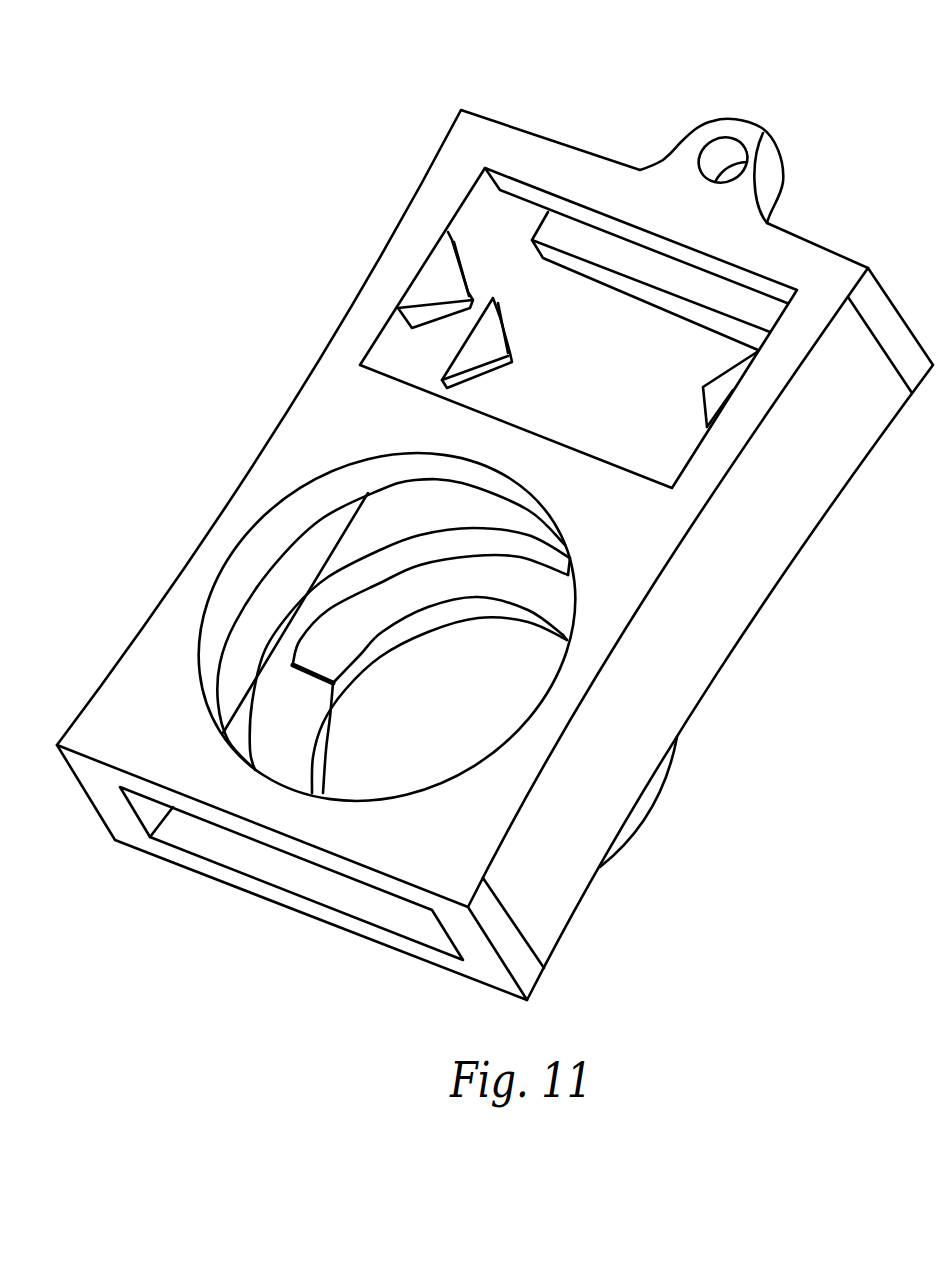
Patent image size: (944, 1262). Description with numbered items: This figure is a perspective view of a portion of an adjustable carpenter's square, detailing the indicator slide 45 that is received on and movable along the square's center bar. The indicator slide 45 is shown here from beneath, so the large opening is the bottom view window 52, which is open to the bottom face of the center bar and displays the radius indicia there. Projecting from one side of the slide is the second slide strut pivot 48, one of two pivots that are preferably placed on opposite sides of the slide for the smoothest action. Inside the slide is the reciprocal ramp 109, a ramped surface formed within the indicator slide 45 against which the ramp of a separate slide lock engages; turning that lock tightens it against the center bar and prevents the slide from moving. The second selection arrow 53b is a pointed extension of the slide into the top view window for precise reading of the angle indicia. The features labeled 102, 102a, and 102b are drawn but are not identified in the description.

The bottom view window 52 is at (437, 113).
The second slide strut pivot 48 is at (703, 133).
The indicator slide 45 is at (145, 698).
The reciprocal ramp 109 is at (330, 647).
The clip 102 is at (417, 293).
The first clip 102a is at (445, 285).
The second clip 102b is at (730, 380).
The second selection arrow 53b is at (493, 343).